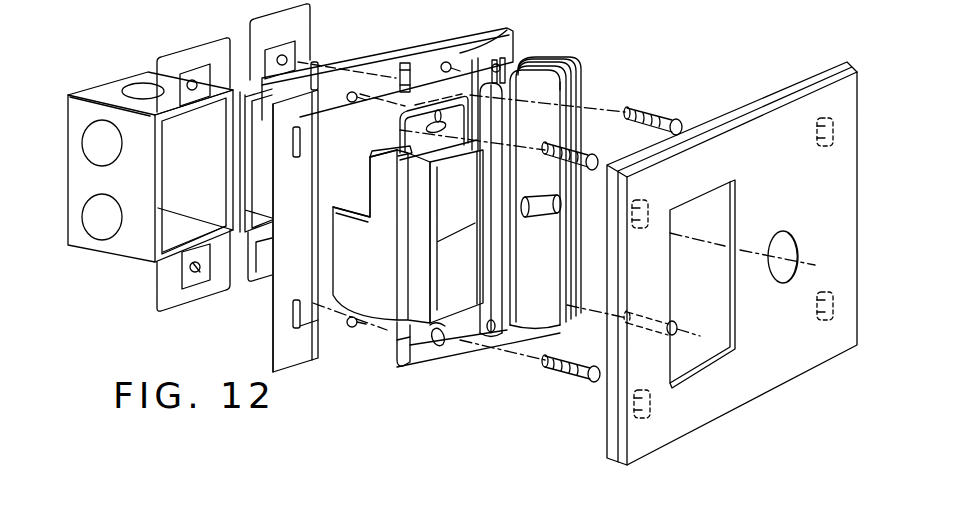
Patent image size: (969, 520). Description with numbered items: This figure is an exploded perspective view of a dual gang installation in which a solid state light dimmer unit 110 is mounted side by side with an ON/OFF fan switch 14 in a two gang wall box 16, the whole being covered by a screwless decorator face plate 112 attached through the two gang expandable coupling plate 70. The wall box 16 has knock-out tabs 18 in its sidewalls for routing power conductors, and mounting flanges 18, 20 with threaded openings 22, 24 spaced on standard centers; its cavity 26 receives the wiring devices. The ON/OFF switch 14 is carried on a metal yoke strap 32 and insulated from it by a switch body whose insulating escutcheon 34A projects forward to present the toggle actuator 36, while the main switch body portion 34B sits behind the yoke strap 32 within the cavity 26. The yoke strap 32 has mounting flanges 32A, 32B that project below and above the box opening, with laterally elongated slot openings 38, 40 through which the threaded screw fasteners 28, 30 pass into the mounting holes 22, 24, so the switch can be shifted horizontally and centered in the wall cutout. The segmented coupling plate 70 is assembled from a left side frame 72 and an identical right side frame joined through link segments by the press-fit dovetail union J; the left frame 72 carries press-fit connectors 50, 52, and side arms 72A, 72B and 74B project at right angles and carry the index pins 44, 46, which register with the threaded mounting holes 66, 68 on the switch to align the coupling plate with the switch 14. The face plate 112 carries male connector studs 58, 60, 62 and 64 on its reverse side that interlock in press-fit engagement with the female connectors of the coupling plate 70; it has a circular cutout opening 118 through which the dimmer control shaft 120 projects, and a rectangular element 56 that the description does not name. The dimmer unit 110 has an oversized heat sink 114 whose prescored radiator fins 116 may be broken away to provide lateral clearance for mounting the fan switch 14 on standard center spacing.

The ON/OFF switch 14 is at (382, 187).
The wall box 16 is at (89, 84).
The mounting flange 18 is at (93, 138).
The mounting flange 20 is at (155, 92).
The threaded opening 22 is at (200, 283).
The threaded opening 24 is at (192, 80).
The wall box cavity 26 is at (181, 179).
The threaded screw fastener 28 is at (570, 376).
The threaded screw fastener 30 is at (583, 151).
The yoke strap 32 is at (404, 372).
The mounting flange of yoke strap 32A is at (422, 352).
The mounting flange of yoke strap 32B is at (512, 57).
The insulating escutcheon 34A is at (391, 236).
The main switch body portion 34B is at (350, 262).
The toggle actuator 36 is at (442, 264).
The slot opening 38 is at (397, 363).
The slot opening 40 is at (371, 155).
The index pin 44 is at (352, 328).
The index pin 46 is at (358, 96).
The press-fit connector 50 is at (274, 342).
The press-fit connector 52 is at (274, 110).
The cover plate opening 56 is at (710, 291).
The press-fit connector stud 58 is at (818, 322).
The press-fit connector stud 60 is at (630, 416).
The press-fit connector stud 62 is at (645, 198).
The press-fit connector stud 64 is at (814, 130).
The threaded mounting hole 66 is at (447, 347).
The threaded mounting hole 68 is at (402, 114).
The segmented coupling plate 70 is at (464, 36).
The left side frame 72 is at (290, 304).
The side arm 72A is at (330, 334).
The side arm 72B is at (312, 94).
The side arm 74B is at (516, 57).
The solid state light dimmer unit 110 is at (590, 83).
The screwless decorator face plate 112 is at (753, 90).
The heat sink 114 is at (541, 63).
The heat sink radiator fin 116 is at (495, 336).
The circular cutout opening 118 is at (786, 248).
The dimmer control shaft 120 is at (545, 210).
The dovetail union J is at (406, 58).